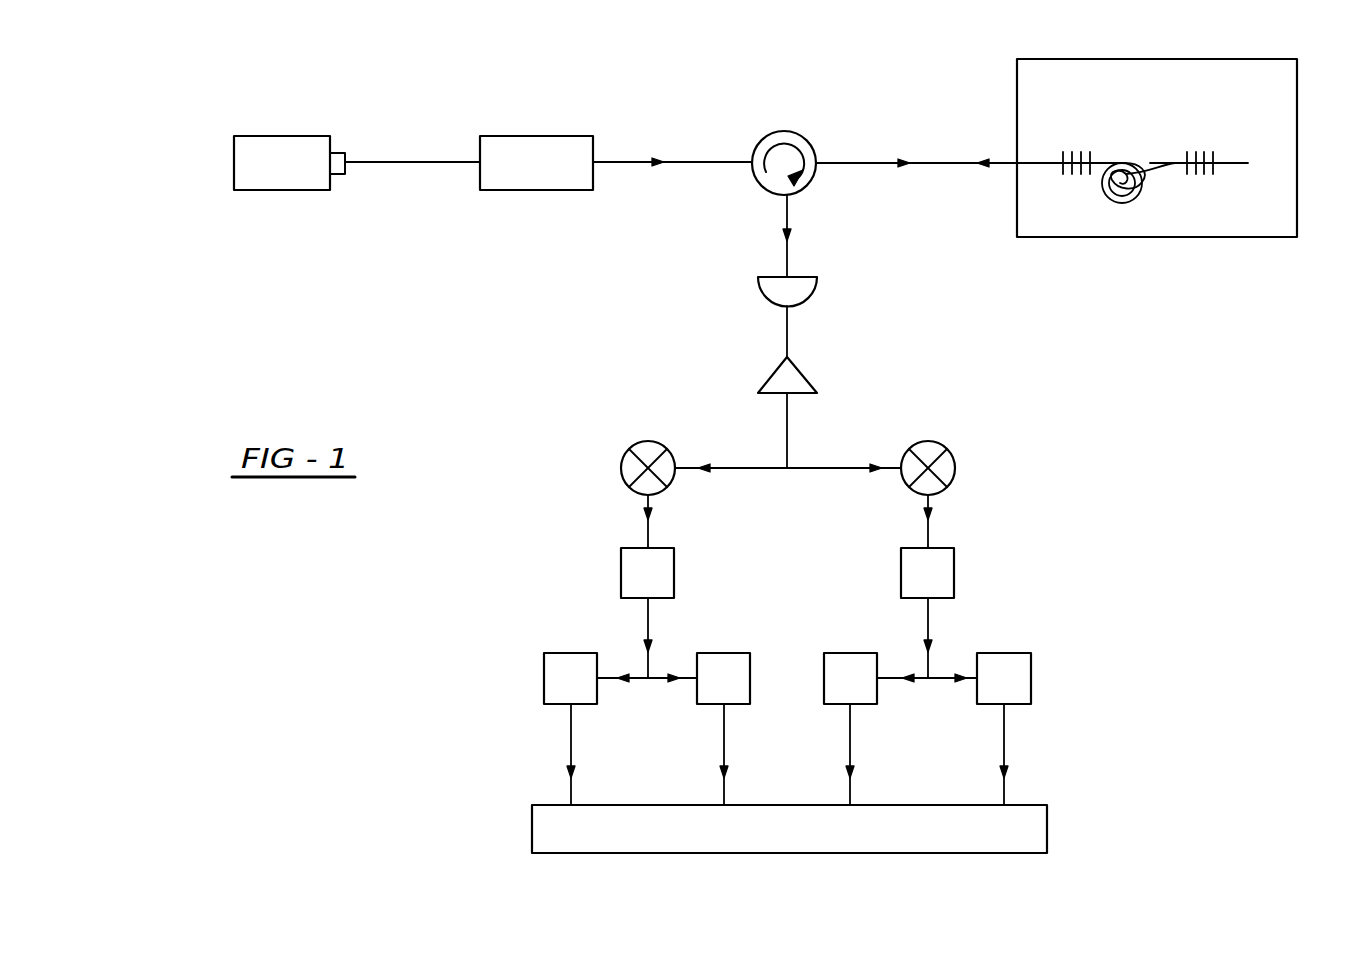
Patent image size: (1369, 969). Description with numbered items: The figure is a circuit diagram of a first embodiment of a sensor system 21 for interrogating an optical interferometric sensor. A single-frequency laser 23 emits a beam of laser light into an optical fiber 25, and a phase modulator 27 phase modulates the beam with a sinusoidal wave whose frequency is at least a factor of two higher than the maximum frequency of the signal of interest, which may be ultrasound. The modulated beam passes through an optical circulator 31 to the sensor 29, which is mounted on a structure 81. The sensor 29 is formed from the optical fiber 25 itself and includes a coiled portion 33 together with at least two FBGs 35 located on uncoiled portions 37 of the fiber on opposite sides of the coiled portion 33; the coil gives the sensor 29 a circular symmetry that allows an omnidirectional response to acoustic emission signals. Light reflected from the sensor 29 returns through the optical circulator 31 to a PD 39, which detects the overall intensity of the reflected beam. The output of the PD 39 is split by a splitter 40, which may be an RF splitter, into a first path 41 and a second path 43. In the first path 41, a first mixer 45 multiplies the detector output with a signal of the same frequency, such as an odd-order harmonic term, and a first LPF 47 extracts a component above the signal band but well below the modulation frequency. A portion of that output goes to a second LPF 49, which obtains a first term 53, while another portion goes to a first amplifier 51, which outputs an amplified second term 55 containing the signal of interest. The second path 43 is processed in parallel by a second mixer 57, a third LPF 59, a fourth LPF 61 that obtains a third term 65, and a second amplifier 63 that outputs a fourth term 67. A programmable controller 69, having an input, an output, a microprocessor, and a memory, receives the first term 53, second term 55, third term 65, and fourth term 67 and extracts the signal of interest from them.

The sensor system 21 is at (1036, 42).
The single-frequency laser 23 is at (281, 135).
The optical fiber 25 is at (405, 161).
The phase modulator 27 is at (536, 136).
The sensor 29 is at (1165, 84).
The optical circulator 31 is at (787, 131).
The coiled portion 33 is at (1135, 200).
The FBGs 35 is at (1078, 152).
The uncoiled portions 37 is at (1108, 162).
The PD 39 is at (815, 287).
The splitter 40 is at (770, 375).
The first path 41 is at (745, 468).
The second path 43 is at (828, 468).
The first mixer 45 is at (622, 460).
The first low-pass filter 47 is at (621, 572).
The second LPF 49 is at (544, 675).
The first amplifier 51 is at (722, 653).
The first term 53 is at (571, 728).
The second term 55 is at (724, 730).
The second mixer 57 is at (955, 470).
The third LPF 59 is at (954, 572).
The fourth LPF 61 is at (851, 653).
The second amplifier 63 is at (1031, 680).
The third term 65 is at (850, 736).
The fourth term 67 is at (1004, 737).
The controller 69 is at (780, 853).
The structure 81 is at (1255, 220).